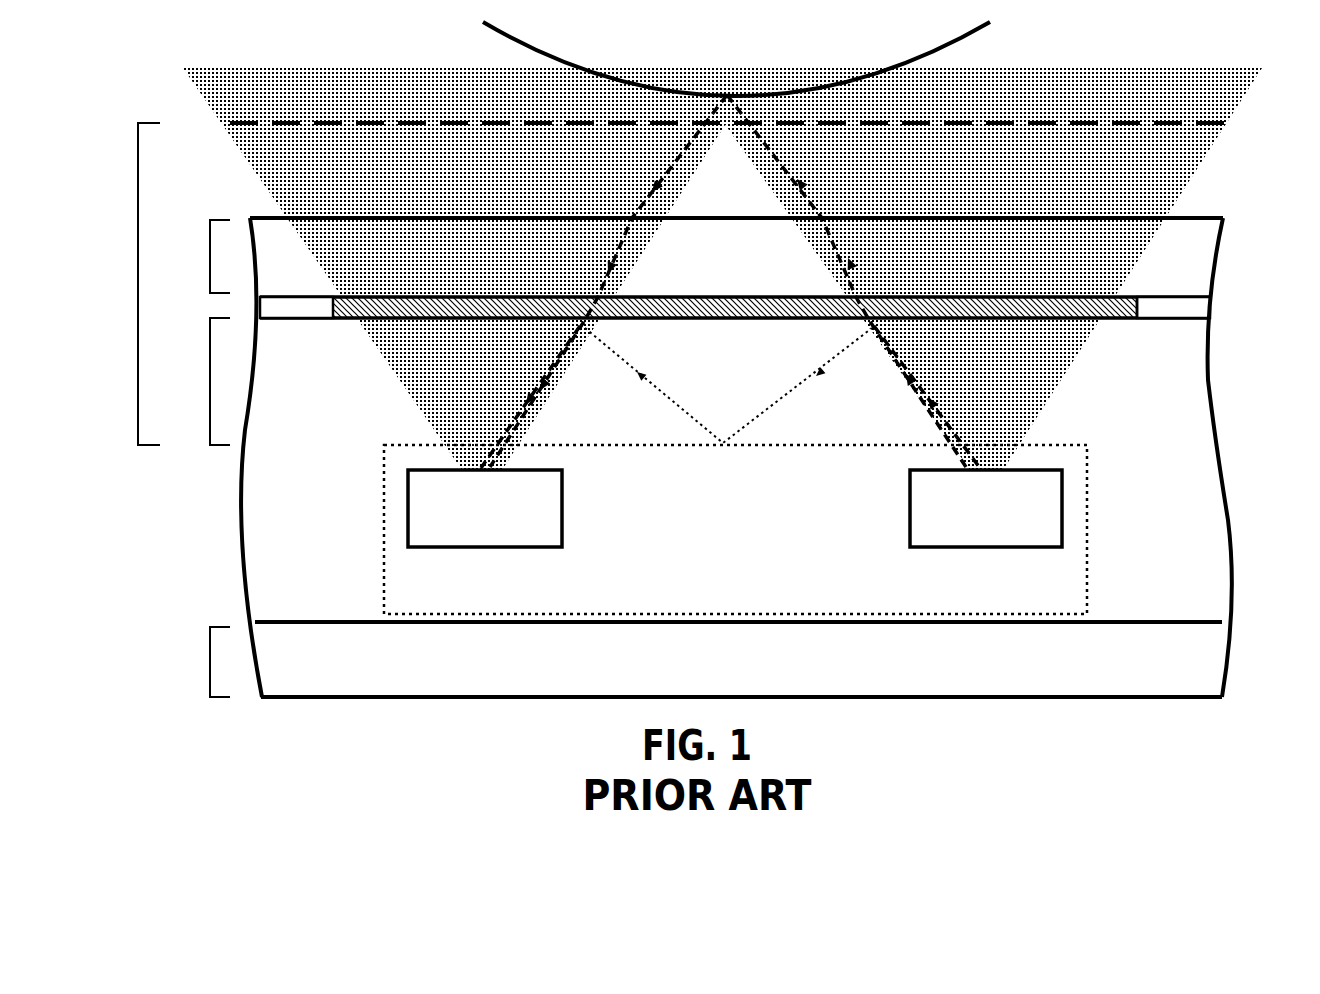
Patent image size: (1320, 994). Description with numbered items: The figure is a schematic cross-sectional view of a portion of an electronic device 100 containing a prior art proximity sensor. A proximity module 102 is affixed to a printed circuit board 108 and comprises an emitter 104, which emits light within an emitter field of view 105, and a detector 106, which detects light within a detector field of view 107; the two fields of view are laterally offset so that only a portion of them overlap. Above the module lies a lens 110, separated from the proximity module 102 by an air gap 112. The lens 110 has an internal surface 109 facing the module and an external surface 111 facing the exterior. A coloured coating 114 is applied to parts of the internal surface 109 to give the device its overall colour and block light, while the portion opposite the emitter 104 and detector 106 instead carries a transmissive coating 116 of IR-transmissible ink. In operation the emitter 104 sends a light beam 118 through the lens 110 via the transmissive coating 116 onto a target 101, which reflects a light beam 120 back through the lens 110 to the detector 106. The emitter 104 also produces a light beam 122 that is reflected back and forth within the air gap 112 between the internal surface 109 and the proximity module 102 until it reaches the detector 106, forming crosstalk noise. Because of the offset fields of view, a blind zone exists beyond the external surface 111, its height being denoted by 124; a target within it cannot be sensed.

The electronic device 100 is at (324, 752).
The target 101 is at (906, 50).
The proximity module 102 is at (634, 587).
The emitter 104 is at (968, 503).
The emitter field of view 105 is at (1075, 370).
The detector 106 is at (468, 503).
The detector field of view 107 is at (392, 368).
The printed circuit board 108 is at (202, 661).
The internal surface 109 is at (743, 293).
The lens 110 is at (201, 260).
The external surface 111 is at (742, 226).
The air gap 112 is at (201, 368).
The coating 114 is at (310, 305).
The transmissive coating 116 is at (1118, 318).
The light beam 118 is at (838, 233).
The reflected light beam 120 is at (676, 162).
The crosstalk light beam 122 is at (552, 358).
The blind zone height 124 is at (180, 151).